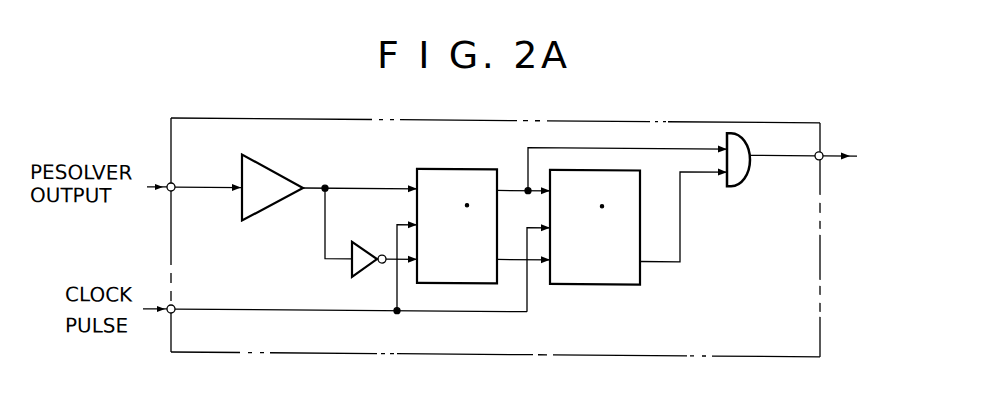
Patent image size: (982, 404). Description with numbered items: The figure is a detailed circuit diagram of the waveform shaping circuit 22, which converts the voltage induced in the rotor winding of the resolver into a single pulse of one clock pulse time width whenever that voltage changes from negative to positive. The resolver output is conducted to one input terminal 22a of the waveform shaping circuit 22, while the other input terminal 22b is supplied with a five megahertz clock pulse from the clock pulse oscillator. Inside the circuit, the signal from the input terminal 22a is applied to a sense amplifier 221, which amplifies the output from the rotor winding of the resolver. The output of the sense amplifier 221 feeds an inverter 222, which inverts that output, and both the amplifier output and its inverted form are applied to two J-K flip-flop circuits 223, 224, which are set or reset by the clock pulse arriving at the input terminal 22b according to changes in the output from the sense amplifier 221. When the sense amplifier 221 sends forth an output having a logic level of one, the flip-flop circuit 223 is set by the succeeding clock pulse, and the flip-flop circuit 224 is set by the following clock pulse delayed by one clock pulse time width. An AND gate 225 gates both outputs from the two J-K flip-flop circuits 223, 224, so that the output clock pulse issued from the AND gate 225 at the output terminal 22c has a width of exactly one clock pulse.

The waveform shaping circuit 22 is at (494, 114).
The input terminal 22a is at (184, 173).
The other input terminal 22b is at (182, 297).
The output terminal 22c is at (818, 169).
The sense amplifier 221 is at (259, 166).
The inverter 222 is at (350, 267).
The J-K flip-flop circuit 223 is at (448, 167).
The J-K flip-flop circuit 224 is at (622, 281).
The AND gate 225 is at (740, 184).